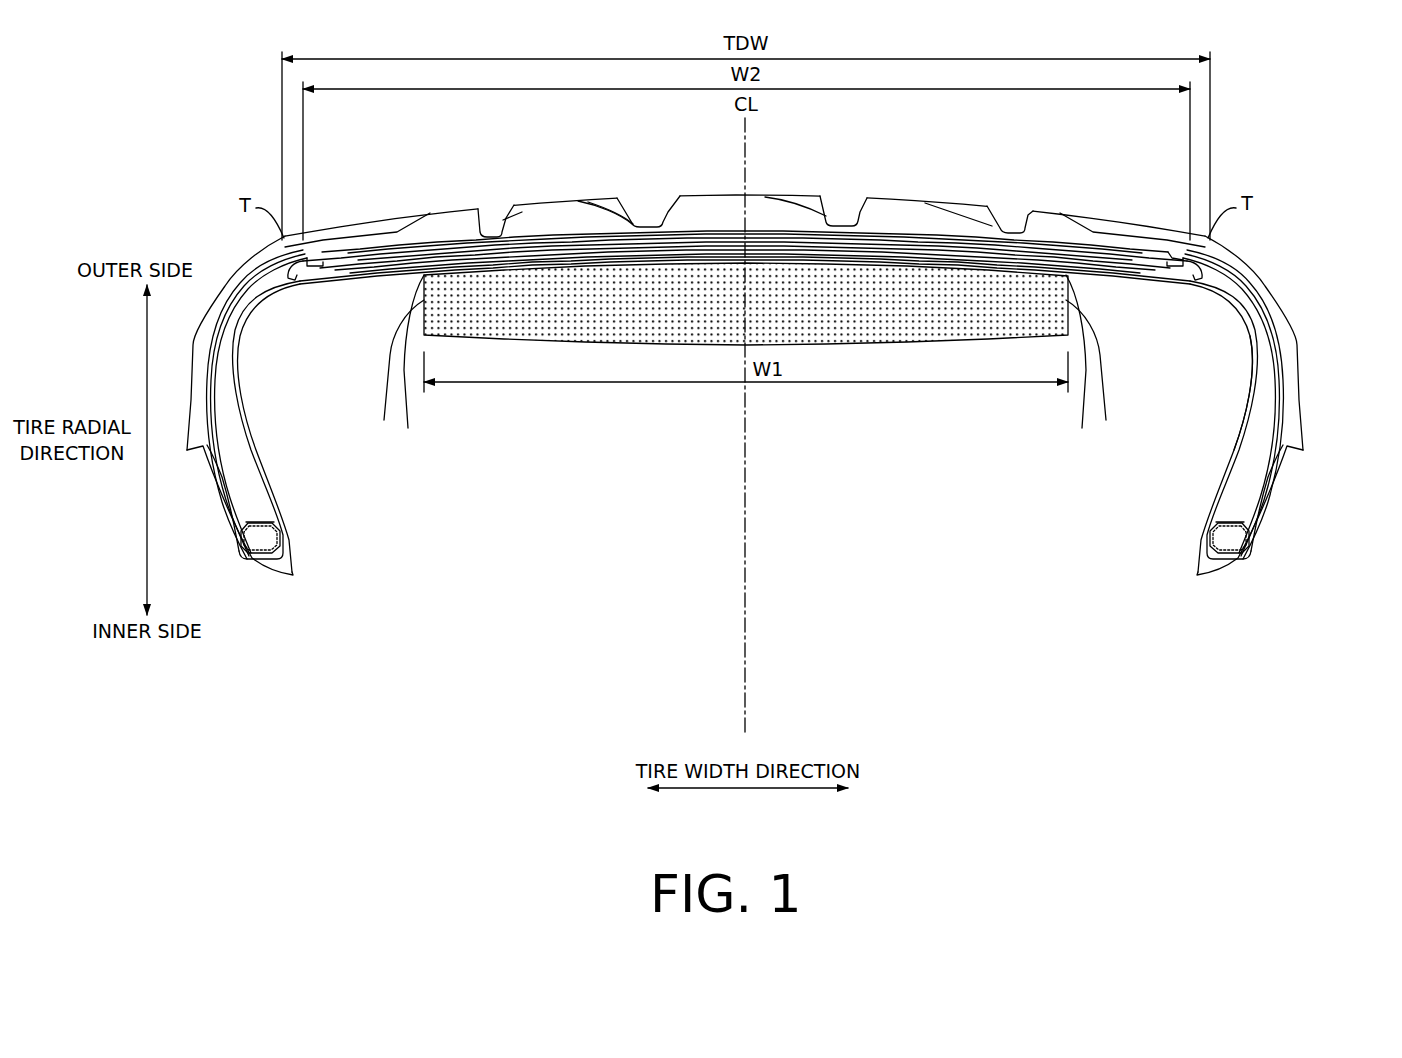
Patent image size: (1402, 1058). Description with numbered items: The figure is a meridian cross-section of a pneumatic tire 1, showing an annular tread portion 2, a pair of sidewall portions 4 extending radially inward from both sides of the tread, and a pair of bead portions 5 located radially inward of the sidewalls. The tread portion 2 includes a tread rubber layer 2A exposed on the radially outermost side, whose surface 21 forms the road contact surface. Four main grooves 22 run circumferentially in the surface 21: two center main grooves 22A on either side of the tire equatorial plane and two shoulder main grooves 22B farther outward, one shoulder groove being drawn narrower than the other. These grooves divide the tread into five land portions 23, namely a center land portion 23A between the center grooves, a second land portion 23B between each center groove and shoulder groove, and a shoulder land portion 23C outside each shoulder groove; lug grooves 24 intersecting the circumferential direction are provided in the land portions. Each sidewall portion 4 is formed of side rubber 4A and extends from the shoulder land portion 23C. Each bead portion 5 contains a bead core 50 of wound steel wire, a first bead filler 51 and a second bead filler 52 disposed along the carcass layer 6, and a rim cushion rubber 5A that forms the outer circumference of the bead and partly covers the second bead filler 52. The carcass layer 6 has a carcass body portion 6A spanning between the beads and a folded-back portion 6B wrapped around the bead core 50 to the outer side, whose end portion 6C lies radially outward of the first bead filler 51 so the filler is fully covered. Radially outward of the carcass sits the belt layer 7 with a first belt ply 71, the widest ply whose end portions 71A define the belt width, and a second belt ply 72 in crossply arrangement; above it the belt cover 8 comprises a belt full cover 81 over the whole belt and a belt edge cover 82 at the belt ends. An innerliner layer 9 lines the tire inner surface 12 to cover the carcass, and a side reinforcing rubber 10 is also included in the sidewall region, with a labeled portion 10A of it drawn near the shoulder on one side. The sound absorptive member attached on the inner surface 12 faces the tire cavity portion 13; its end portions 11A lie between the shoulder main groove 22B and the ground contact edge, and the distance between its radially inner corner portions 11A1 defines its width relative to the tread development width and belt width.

The pneumatic tire 1 is at (1256, 146).
The tread portion 2 is at (778, 188).
The tread rubber layer 2A is at (614, 220).
The surface 21 is at (559, 199).
The main groove 22 is at (748, 180).
The center main groove 22A is at (665, 223).
The shoulder main groove 22B is at (480, 227).
The land portion 23 is at (745, 185).
The center land portion 23A is at (714, 195).
The second land portion 23B is at (910, 196).
The shoulder land portion 23C is at (388, 218).
The lug groove 24 is at (798, 189).
The sidewall portion 4 is at (216, 268).
The side rubber 4A is at (1295, 412).
The bead portion 5 is at (222, 543).
The rim cushion rubber 5A is at (222, 483).
The bead core 50 is at (270, 535).
The first bead filler 51 is at (248, 507).
The second bead filler 52 is at (1272, 456).
The carcass layer 6 is at (1386, 284).
The carcass body portion 6A is at (1268, 323).
The folded-back portion 6B is at (1302, 386).
The end portion 6C is at (1284, 352).
The belt layer 7 is at (314, 346).
The first belt ply 71 is at (326, 276).
The end portion 71A is at (289, 268).
The second belt ply 72 is at (358, 264).
The belt cover 8 is at (364, 146).
The belt full cover 81 is at (349, 255).
The belt edge cover 82 is at (322, 256).
The innerliner layer 9 is at (259, 451).
The side reinforcing rubber 10 is at (244, 429).
The carcass turn-up end 10A is at (1170, 282).
The end portion 11A is at (406, 410).
The corner portion 11A1 is at (746, 366).
The tire inner surface 12 is at (1247, 386).
The tire cavity portion 13 is at (764, 427).